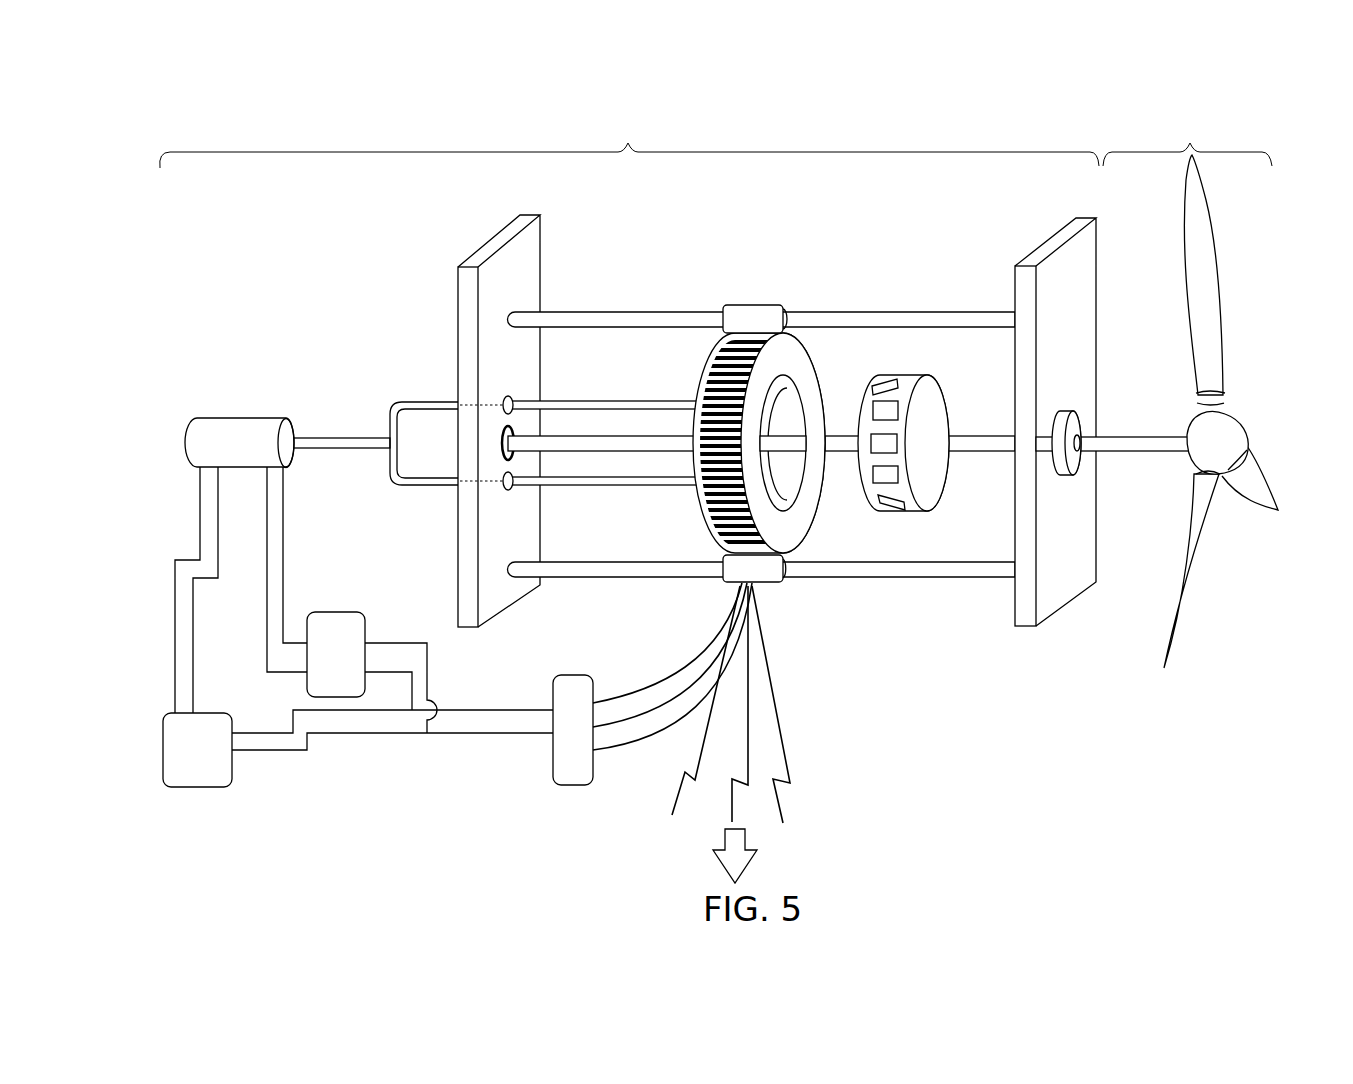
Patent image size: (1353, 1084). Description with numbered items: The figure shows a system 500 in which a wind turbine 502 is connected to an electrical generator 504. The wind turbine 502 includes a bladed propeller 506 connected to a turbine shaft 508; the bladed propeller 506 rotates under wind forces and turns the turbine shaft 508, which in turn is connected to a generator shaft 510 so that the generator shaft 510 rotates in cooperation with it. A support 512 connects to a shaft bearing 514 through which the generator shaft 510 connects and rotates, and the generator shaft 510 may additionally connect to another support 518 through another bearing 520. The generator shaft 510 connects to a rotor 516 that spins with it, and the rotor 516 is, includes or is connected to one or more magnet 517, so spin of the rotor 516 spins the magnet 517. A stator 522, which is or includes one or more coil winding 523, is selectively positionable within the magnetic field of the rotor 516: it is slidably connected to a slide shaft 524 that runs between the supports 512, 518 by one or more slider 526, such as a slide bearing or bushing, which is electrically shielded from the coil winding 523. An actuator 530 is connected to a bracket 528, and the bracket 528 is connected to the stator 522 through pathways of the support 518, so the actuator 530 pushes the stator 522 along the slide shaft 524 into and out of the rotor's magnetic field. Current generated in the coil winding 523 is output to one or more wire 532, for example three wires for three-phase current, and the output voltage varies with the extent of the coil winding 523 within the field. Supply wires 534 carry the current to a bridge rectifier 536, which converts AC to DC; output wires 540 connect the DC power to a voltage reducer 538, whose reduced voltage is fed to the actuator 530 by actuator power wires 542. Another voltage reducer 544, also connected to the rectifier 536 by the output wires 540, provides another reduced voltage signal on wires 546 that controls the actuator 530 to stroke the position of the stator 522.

The system 500 is at (949, 138).
The wind turbine 502 is at (1187, 139).
The electrical generator 504 is at (629, 140).
The bladed propeller 506 is at (1219, 279).
The turbine shaft 508 is at (1122, 430).
The generator shaft 510 is at (984, 437).
The support 512 is at (1099, 292).
The shaft bearing 514 is at (1080, 410).
The rotor 516 is at (932, 375).
The magnet 517 is at (900, 503).
The support 518 is at (540, 272).
The bearing 520 is at (512, 430).
The stator 522 is at (807, 347).
The coil winding 523 is at (720, 573).
The slide shaft 524 is at (608, 560).
The slider 526 is at (794, 305).
The bracket 528 is at (425, 397).
The actuator 530 is at (225, 418).
The wire 532 is at (780, 720).
The supply wires 534 is at (612, 750).
The bridge rectifier 536 is at (573, 790).
The voltage reducer 538 is at (367, 613).
The output wires 540 is at (457, 738).
The actuator power wires 542 is at (283, 540).
The voltage reducer 544 is at (198, 790).
The wires 546 is at (200, 543).